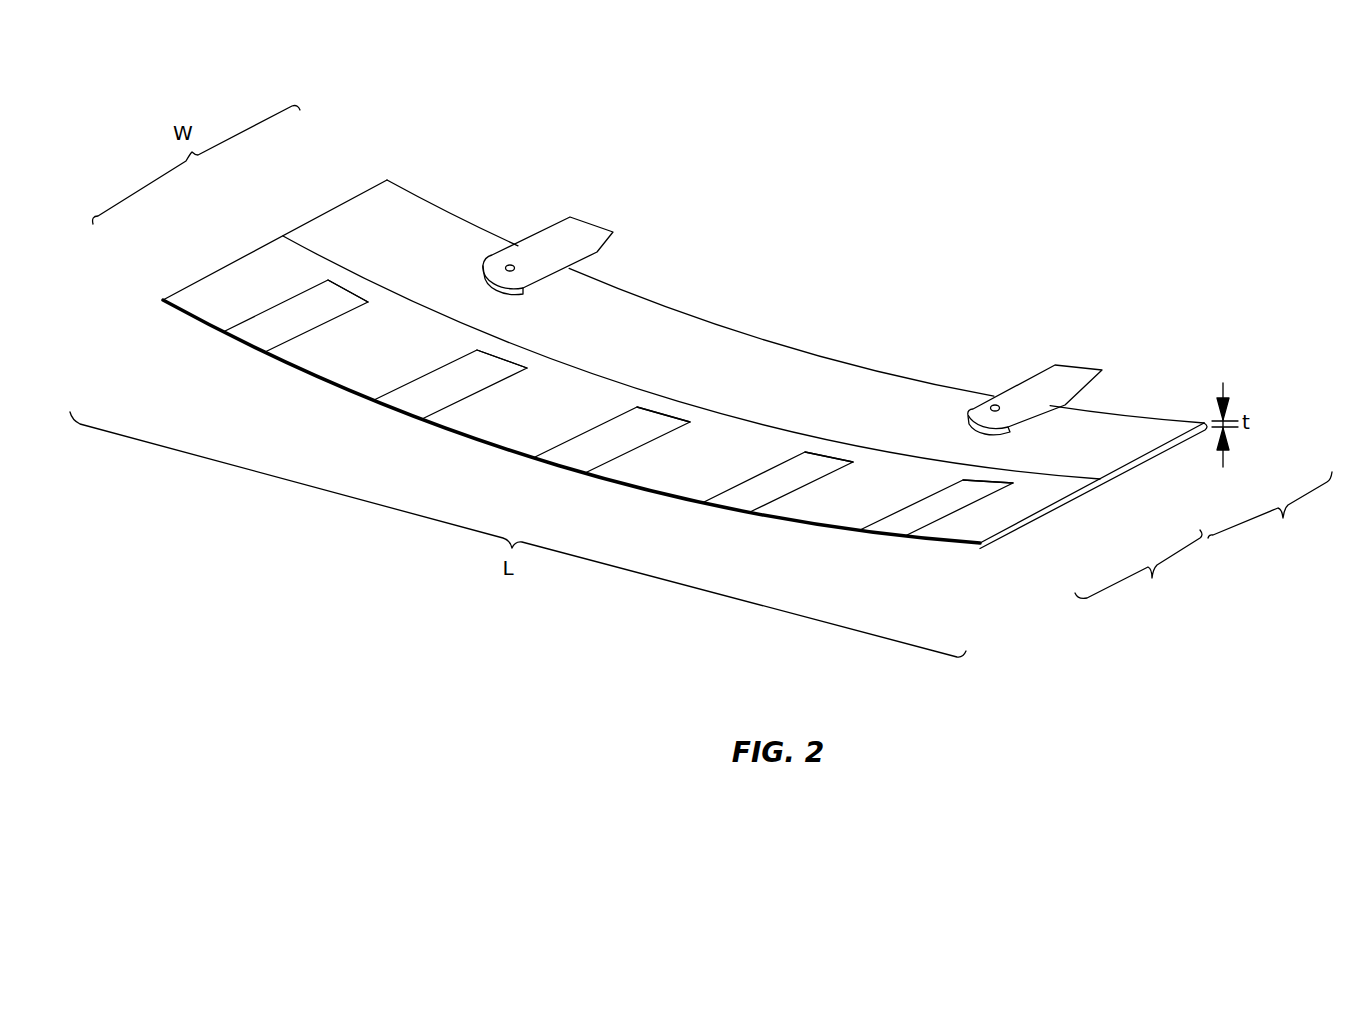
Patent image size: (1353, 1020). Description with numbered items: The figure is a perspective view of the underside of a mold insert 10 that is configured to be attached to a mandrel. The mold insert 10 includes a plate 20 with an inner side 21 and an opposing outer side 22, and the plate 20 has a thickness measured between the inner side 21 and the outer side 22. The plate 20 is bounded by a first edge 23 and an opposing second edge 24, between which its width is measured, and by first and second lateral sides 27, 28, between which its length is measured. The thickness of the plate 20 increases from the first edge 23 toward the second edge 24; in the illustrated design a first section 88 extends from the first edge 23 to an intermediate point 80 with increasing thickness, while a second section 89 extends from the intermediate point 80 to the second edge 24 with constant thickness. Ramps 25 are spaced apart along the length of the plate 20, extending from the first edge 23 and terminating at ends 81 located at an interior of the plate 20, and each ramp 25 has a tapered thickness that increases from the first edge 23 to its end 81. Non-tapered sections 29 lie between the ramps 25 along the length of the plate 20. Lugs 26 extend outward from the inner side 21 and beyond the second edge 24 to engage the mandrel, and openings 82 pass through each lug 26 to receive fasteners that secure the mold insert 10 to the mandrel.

The mold insert 10 is at (1115, 237).
The plate 20 is at (205, 292).
The inner side 21 is at (1103, 445).
The outer side 22 is at (1048, 512).
The first edge 23 is at (310, 380).
The second edge 24 is at (683, 302).
The ramps 25 is at (240, 332).
The lugs 26 is at (565, 235).
The first lateral side 27 is at (1120, 473).
The second lateral side 28 is at (235, 258).
The non-tapered sections 29 is at (345, 373).
The intermediate point 80 is at (283, 235).
The end 81 is at (313, 285).
The openings 82 is at (510, 265).
The first section 88 is at (1138, 564).
The second section 89 is at (1270, 506).